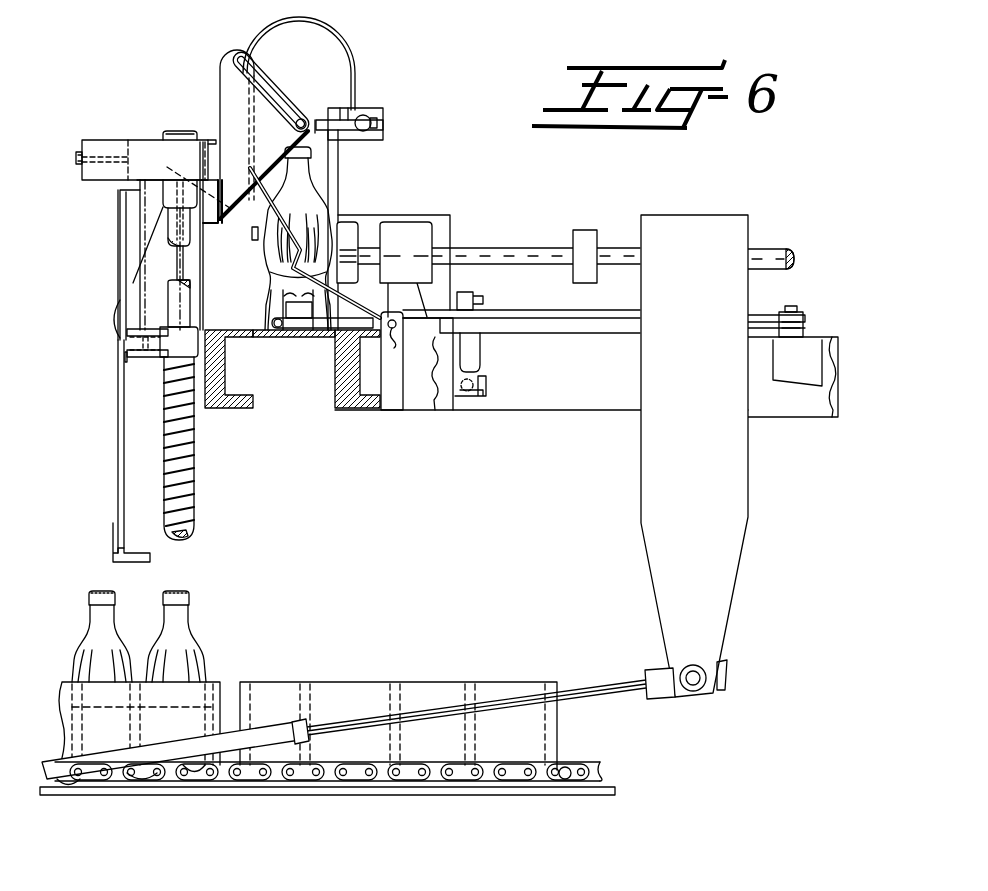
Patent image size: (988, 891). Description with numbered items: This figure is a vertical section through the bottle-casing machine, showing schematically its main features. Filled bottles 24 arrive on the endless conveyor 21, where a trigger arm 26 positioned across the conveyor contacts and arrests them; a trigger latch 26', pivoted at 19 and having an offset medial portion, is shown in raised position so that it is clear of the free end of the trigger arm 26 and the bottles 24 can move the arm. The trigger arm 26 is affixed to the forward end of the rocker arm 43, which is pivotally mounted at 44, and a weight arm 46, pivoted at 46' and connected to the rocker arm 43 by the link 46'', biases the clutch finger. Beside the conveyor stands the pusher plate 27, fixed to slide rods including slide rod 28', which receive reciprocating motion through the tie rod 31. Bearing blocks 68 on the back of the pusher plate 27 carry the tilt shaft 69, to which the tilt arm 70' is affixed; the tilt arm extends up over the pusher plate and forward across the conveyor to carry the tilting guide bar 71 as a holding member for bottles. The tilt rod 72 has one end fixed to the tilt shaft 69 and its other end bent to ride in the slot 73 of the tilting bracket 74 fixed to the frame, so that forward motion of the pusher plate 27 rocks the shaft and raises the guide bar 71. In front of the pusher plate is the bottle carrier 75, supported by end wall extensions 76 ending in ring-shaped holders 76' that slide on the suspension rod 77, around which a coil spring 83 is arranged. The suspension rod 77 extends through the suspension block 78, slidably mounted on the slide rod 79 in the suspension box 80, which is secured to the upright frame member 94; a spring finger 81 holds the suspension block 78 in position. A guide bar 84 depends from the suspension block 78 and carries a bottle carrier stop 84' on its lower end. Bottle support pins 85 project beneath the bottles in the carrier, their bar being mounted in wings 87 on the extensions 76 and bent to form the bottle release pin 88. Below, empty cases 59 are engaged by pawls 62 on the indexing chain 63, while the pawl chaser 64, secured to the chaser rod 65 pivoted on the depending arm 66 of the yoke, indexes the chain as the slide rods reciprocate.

The pivot 19 is at (398, 344).
The endless conveyor 21 is at (262, 342).
The bottles 24 is at (298, 182).
The trigger arm 26 is at (297, 308).
The trigger latch 26' is at (267, 292).
The pusher plate 27 is at (338, 160).
The slide rod 28' is at (576, 238).
The tie rod 31 is at (596, 211).
The rocker arm 43 is at (568, 316).
The pivot 44 is at (794, 293).
The weight arm 46 is at (494, 362).
The pivot 46' is at (494, 393).
The link 46'' is at (491, 294).
The cases 59 is at (268, 690).
The pawl 62 is at (234, 781).
The indexing chain 63 is at (520, 743).
The pawl chaser 64 is at (266, 736).
The chaser rod 65 is at (585, 690).
The depending arm 66 is at (645, 470).
The bearing block 68 is at (383, 128).
The tilt shaft 69 is at (382, 115).
The tilt arm 70' is at (324, 63).
The tilting guide bar 71 is at (250, 237).
The tilt rod 72 is at (321, 120).
The slot 73 is at (240, 58).
The tilting bracket 74 is at (240, 56).
The bottle carrier 75 is at (128, 222).
The end wall extension 76 is at (136, 269).
The ring-shaped holder 76' is at (142, 289).
The suspension rod 77 is at (168, 442).
The suspension block 78 is at (143, 142).
The slide rod 79 is at (105, 156).
The suspension box 80 is at (92, 178).
The spring finger 81 is at (203, 140).
The coil spring 83 is at (192, 472).
The guide bar 84 is at (102, 371).
The bottle carrier stop 84' is at (111, 543).
The bottle support pin 85 is at (122, 355).
The wing 87 is at (112, 336).
The bottle release pin 88 is at (126, 360).
The upright frame member 94 is at (205, 230).